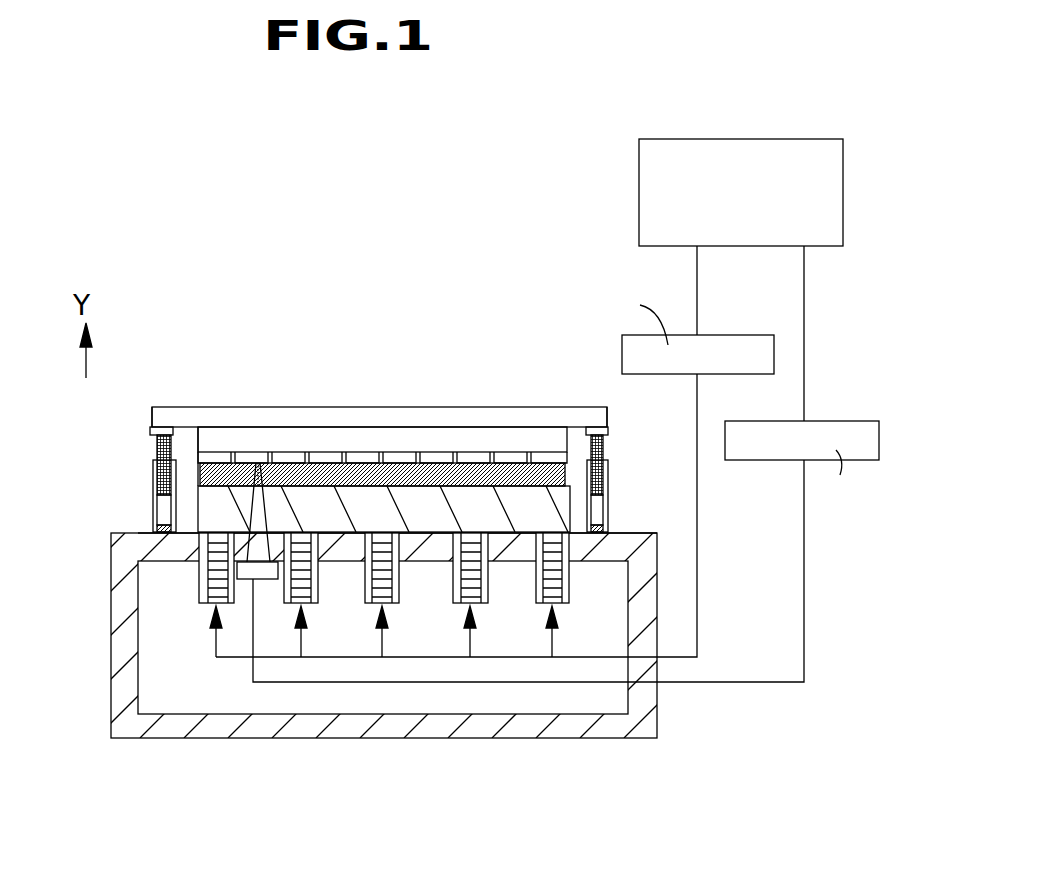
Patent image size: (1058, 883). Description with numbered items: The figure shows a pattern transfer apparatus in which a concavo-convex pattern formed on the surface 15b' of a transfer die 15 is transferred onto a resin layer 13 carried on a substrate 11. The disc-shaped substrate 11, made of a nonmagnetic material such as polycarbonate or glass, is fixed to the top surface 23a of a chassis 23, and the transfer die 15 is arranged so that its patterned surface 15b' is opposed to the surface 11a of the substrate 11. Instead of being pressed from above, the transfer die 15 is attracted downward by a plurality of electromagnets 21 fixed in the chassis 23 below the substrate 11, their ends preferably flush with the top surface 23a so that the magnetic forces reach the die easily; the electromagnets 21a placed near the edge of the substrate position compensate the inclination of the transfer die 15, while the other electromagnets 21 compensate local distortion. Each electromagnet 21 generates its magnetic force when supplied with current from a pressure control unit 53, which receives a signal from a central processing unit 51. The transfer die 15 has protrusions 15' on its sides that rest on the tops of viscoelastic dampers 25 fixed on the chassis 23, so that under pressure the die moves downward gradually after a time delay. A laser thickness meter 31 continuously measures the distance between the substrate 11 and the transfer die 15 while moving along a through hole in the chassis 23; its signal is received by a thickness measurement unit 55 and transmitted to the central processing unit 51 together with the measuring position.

The substrate 11 is at (570, 500).
The surface of the substrate 11a is at (198, 478).
The resin layer 13 is at (567, 474).
The transfer die 15 is at (379, 398).
The protrusions 15' is at (376, 385).
The surface of the transfer die 15b' is at (363, 418).
The electromagnets 21 is at (305, 605).
The electromagnets near the edge 21a is at (213, 605).
The chassis 23 is at (111, 563).
The top surface of the chassis 23a is at (640, 533).
The viscoelastic dampers 25 is at (150, 461).
The laser thickness meter 31 is at (270, 580).
The central processing unit 51 is at (818, 139).
The pressure control unit 53 is at (735, 335).
The thickness measurement unit 55 is at (848, 421).